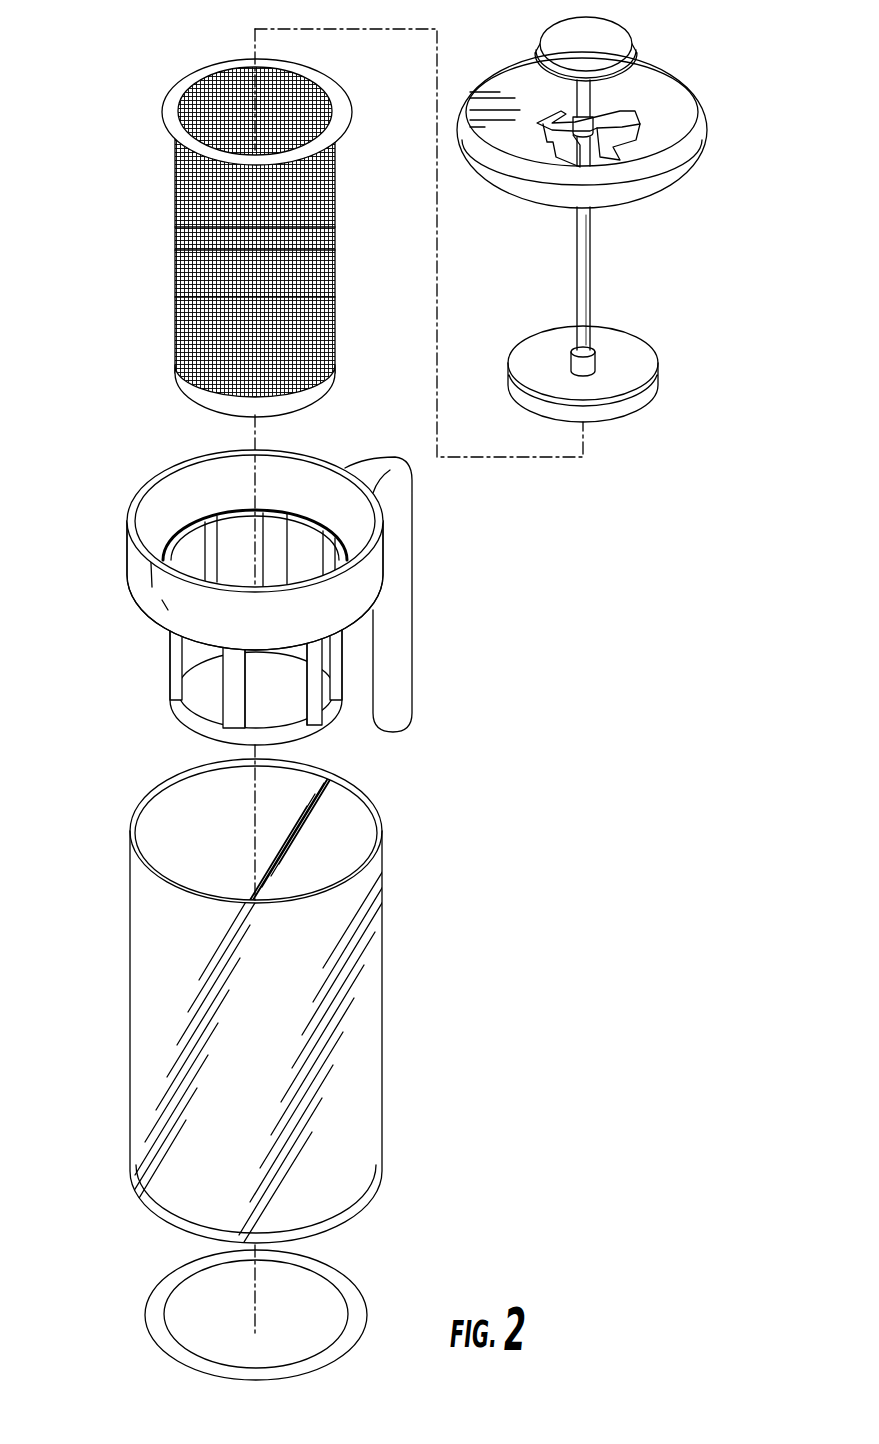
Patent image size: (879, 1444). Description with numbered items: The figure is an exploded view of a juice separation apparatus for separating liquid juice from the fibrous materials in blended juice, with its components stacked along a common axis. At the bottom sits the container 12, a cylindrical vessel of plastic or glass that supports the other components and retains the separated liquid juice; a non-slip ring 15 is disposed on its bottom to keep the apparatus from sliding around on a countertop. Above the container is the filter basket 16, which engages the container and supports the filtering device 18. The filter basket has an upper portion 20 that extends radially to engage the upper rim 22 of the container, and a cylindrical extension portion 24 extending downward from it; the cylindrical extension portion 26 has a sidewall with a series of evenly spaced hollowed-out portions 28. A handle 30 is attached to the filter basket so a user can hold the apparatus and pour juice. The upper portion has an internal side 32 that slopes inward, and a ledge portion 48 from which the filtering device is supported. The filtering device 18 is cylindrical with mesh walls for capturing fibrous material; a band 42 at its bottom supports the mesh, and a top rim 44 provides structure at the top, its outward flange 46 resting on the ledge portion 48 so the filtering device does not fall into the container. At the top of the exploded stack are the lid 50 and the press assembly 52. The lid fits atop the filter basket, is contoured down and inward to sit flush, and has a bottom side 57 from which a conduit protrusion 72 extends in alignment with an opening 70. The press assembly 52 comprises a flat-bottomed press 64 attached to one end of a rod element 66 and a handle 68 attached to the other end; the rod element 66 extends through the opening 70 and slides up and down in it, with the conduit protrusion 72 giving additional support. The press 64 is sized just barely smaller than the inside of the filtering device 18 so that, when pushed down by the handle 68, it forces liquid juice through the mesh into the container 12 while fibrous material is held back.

The container 12 is at (377, 990).
The non-slip ring 15 is at (348, 1290).
The filter basket 16 is at (352, 610).
The filtering device 18 is at (150, 270).
The upper portion 20 is at (372, 573).
The upper rim 22 is at (147, 493).
The cylindrical extension portion 24 is at (158, 683).
The cylindrical extension portion 26 is at (315, 686).
The hollowed-out portions 28 is at (220, 540).
The handle 30 is at (400, 608).
The internal side 32 is at (177, 493).
The band 42 is at (307, 397).
The top rim 44 is at (300, 82).
The flange 46 is at (185, 80).
The ledge portion 48 is at (170, 550).
The lid 50 is at (683, 98).
The press assembly 52 is at (700, 238).
The bottom side 57 is at (622, 135).
The press 64 is at (630, 360).
The rod element 66 is at (578, 153).
The handle 68 is at (597, 33).
The opening 70 is at (578, 112).
The conduit protrusion 72 is at (608, 130).